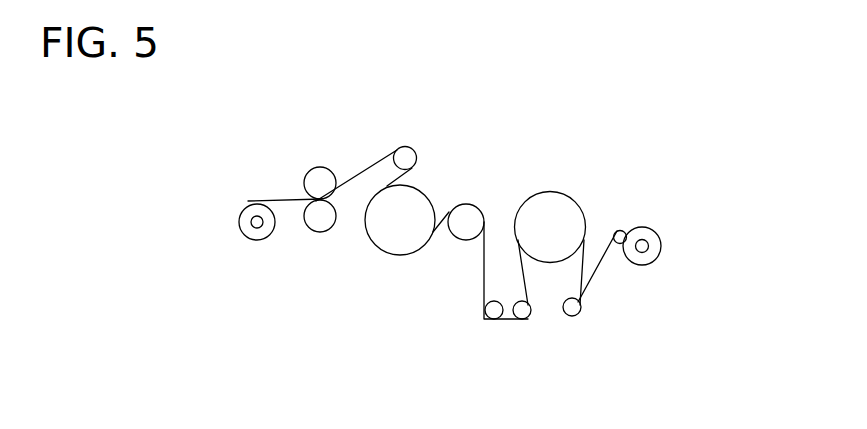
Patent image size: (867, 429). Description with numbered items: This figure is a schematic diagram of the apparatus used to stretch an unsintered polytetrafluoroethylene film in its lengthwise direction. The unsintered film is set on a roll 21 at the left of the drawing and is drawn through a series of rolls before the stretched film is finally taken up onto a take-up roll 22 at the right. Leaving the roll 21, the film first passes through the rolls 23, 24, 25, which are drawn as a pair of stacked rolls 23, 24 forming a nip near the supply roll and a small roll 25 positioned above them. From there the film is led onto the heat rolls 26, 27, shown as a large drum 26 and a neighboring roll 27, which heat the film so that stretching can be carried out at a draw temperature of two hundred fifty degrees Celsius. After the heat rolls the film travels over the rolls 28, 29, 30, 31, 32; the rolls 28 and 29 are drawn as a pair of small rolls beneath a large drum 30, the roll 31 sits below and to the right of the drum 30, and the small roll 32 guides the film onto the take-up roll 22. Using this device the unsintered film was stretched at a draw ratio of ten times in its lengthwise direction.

The roll 21 is at (263, 239).
The take-up roll 22 is at (661, 233).
The roll 23 is at (328, 232).
The roll 24 is at (306, 170).
The roll 25 is at (418, 148).
The heat roll 26 is at (402, 258).
The heat roll 27 is at (481, 201).
The roll 28 is at (486, 318).
The roll 29 is at (529, 320).
The roll 30 is at (561, 190).
The roll 31 is at (582, 317).
The roll 32 is at (618, 231).